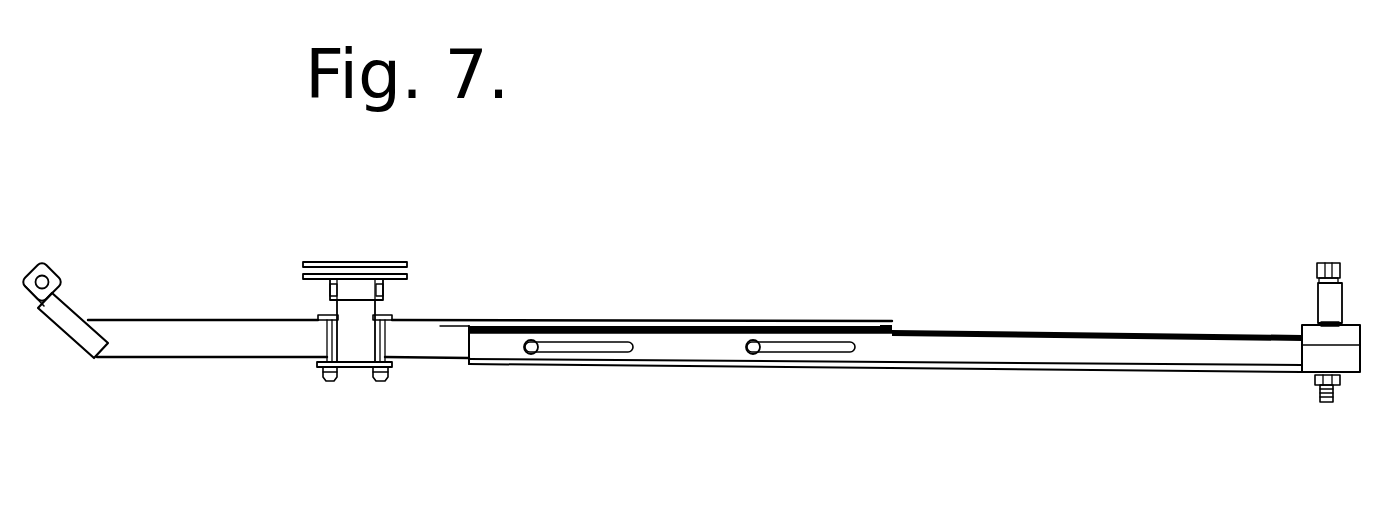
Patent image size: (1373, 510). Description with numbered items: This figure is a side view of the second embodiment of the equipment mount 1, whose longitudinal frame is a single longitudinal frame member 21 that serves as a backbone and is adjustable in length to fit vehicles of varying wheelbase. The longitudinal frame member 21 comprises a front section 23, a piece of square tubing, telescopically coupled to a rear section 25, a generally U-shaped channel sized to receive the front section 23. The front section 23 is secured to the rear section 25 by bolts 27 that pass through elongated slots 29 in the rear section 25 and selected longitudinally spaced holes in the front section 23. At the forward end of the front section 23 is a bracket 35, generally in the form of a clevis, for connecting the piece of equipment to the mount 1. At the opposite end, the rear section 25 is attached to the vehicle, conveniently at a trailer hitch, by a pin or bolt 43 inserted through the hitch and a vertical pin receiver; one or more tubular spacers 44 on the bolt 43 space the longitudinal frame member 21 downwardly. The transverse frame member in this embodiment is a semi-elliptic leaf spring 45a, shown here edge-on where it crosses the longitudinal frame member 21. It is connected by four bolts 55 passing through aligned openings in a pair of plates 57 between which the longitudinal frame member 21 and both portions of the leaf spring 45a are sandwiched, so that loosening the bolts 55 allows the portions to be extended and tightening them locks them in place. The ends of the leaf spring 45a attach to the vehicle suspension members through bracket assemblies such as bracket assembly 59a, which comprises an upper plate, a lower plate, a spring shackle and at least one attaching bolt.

The mount 1 is at (787, 196).
The longitudinal frame member 21 is at (843, 325).
The front section 23 is at (425, 318).
The rear section 25 is at (1070, 332).
The bolts 27 is at (537, 353).
The elongated slots 29 is at (628, 357).
The bracket 35 is at (56, 270).
The pin or bolt 43 is at (1330, 262).
The tubular spacers 44 is at (1318, 298).
The semi-elliptic leaf spring 45a is at (337, 336).
The bolts 55 is at (332, 383).
The plates 57 is at (363, 362).
The bracket assembly 59a is at (367, 260).